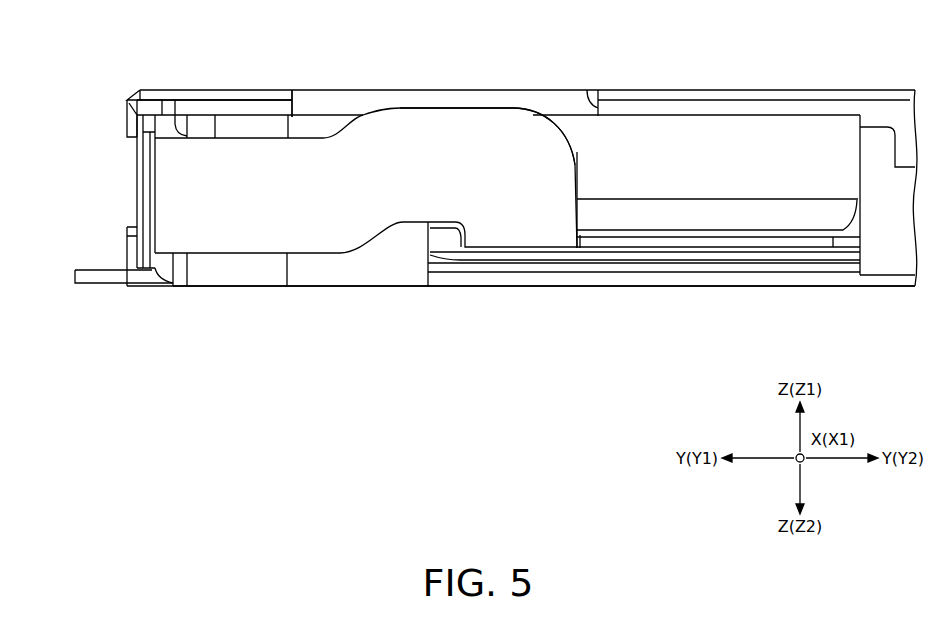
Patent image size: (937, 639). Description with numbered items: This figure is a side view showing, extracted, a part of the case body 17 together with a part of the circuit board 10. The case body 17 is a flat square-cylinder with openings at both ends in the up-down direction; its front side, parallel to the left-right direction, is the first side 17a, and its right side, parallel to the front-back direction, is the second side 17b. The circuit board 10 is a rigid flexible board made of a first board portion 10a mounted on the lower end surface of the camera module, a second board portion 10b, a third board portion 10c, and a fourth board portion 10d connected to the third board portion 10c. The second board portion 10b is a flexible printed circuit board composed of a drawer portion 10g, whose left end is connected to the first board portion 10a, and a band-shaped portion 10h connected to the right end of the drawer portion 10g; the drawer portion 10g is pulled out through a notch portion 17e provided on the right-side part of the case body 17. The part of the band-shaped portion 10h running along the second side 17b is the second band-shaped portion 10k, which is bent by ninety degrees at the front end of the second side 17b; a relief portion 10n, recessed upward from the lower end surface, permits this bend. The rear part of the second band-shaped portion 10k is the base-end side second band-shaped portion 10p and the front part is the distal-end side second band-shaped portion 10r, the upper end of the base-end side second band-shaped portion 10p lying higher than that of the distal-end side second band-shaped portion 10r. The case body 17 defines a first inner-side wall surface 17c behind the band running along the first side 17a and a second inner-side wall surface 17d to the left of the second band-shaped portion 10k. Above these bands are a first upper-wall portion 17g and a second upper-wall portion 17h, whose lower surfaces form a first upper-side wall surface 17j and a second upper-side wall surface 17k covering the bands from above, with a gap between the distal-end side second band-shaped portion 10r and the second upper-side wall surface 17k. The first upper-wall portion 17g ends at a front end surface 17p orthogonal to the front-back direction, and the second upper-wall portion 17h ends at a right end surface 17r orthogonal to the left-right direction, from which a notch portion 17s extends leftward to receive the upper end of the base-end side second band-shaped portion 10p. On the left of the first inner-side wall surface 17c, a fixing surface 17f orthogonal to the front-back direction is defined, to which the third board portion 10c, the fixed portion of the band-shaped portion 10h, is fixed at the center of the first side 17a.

The case body 17 is at (808, 90).
The first upper-wall portion 17g is at (152, 90).
The front end surface 17p is at (127, 108).
The first inner-side wall surface 17c is at (177, 120).
The second upper-wall portion 17h is at (238, 105).
The right end surface 17r is at (272, 108).
The second upper-side wall surface 17k is at (213, 118).
The first upper-side wall surface 17j is at (158, 138).
The third board portion 10c is at (150, 172).
The first side 17a is at (118, 217).
The fourth board portion 10d is at (92, 284).
The fixing surface 17f is at (159, 287).
The circuit board 10 is at (297, 137).
The second band-shaped portion 10k is at (487, 100).
The base-end side second band-shaped portion 10p is at (450, 108).
The notch portion 17s is at (587, 90).
The band-shaped portion 10h is at (247, 318).
The distal-end side second band-shaped portion 10r is at (248, 255).
The second inner-side wall surface 17d is at (347, 273).
The relief portion 10n is at (417, 225).
The notch portion 17e is at (445, 277).
The second side 17b is at (605, 316).
The second board portion 10b is at (718, 195).
The drawer portion 10g is at (730, 233).
The first board portion 10a is at (840, 253).